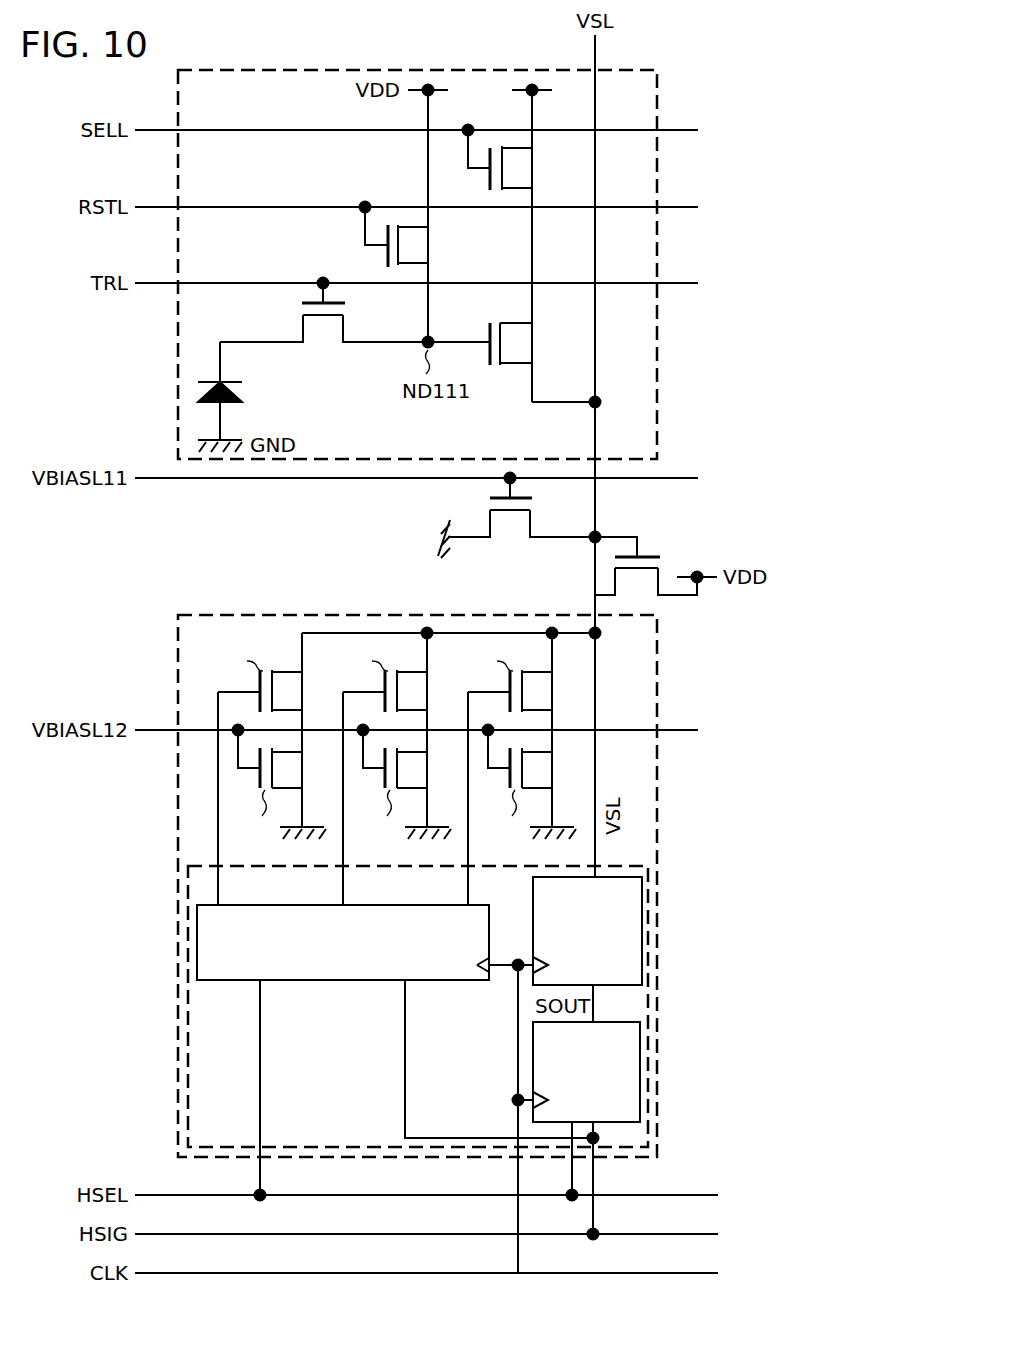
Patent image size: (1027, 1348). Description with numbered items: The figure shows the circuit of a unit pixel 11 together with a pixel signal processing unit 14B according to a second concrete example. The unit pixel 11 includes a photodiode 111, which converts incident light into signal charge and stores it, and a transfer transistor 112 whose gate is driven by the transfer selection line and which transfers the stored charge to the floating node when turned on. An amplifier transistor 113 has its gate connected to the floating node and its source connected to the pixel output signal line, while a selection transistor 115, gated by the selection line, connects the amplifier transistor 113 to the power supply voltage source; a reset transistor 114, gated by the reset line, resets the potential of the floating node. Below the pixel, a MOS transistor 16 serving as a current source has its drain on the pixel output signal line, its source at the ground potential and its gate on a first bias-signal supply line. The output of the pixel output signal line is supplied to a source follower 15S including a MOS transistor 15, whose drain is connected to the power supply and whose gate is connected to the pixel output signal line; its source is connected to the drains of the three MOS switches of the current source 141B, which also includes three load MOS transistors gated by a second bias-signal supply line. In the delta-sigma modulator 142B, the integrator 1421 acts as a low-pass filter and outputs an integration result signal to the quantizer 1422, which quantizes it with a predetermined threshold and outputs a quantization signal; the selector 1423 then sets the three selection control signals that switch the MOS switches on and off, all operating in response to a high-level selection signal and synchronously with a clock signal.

The unit pixel 11 is at (323, 68).
The photodiode 111 is at (240, 394).
The transfer transistor 112 is at (323, 335).
The amplifier transistor 113 is at (520, 343).
The reset transistor 114 is at (416, 245).
The selection transistor 115 is at (520, 168).
The MOS transistor 15 is at (663, 573).
The source follower 15S is at (638, 596).
The MOS transistor 16 is at (513, 522).
The pixel signal processing unit 14B is at (657, 804).
The current source 141B is at (197, 788).
The ΔΣ modulator 142B is at (188, 1064).
The integrator 1421 is at (642, 932).
The quantizer 1422 is at (640, 1072).
The selector 1423 is at (197, 945).